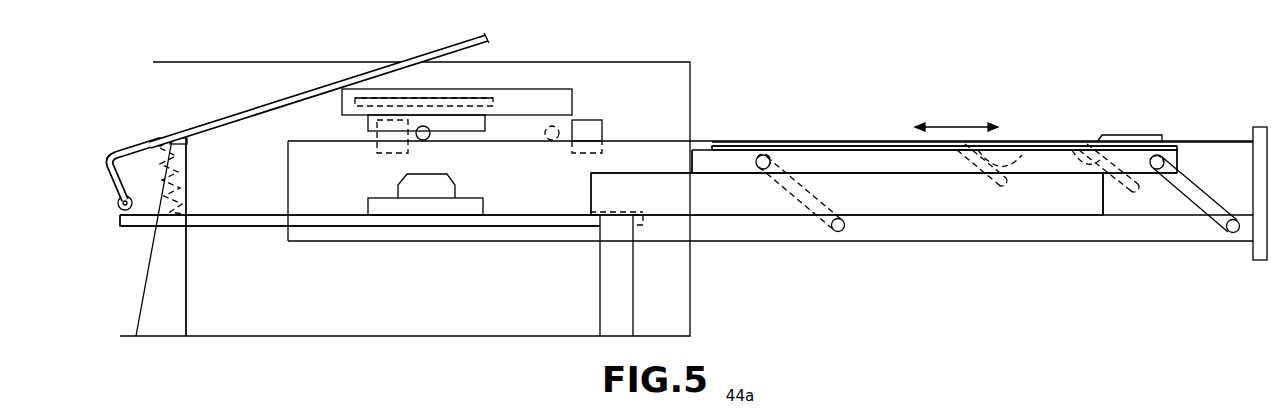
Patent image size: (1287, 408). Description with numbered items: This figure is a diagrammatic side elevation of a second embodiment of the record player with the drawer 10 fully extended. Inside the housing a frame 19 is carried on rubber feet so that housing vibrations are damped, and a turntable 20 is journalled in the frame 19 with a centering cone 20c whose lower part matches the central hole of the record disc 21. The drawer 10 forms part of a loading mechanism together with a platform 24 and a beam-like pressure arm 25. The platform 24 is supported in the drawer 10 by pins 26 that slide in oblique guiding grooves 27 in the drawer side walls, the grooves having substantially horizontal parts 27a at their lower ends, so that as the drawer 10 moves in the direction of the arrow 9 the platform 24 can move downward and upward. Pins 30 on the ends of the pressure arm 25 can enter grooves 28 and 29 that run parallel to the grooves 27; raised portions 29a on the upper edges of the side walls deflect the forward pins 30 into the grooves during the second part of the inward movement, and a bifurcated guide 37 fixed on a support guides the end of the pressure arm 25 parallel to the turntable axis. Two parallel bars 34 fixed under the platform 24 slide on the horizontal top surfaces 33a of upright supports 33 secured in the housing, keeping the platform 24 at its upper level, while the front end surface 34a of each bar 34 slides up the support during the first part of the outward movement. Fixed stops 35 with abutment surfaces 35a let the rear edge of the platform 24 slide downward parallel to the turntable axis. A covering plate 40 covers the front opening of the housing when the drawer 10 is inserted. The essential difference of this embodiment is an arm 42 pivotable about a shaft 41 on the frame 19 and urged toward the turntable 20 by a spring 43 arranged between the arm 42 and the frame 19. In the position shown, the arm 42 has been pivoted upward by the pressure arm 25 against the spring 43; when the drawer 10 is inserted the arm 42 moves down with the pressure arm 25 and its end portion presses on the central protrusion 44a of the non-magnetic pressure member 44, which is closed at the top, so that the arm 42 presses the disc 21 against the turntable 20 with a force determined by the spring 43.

The arrow 9 is at (955, 124).
The drawer 10 is at (1050, 243).
The frame 19 is at (244, 220).
The turntable 20 is at (485, 206).
The centering cone 20c is at (455, 190).
The record disc 21 is at (845, 146).
The platform 24 is at (883, 152).
The pressure arm 25 is at (565, 96).
The pins 26 is at (763, 153).
The guiding grooves 27 is at (798, 186).
The horizontal parts of the grooves 27a is at (835, 232).
The grooves 28 is at (1020, 147).
The grooves 29 is at (1078, 148).
The raised portions 29a is at (1128, 135).
The pins 30 is at (430, 139).
The upright supports 33 is at (611, 279).
The horizontal top surfaces 33a is at (618, 216).
The bars 34 is at (912, 215).
The front end surface of the bar 34a is at (1104, 198).
The stops 35 is at (172, 302).
The abutment surfaces 35a is at (187, 280).
The bifurcated guide 37 is at (385, 131).
The covering plate 40 is at (1253, 130).
The shaft 41 is at (133, 210).
The arm 42 is at (283, 108).
The spring 43 is at (158, 152).
The pressure member 44 is at (363, 98).
The central protrusion 44a is at (428, 98).